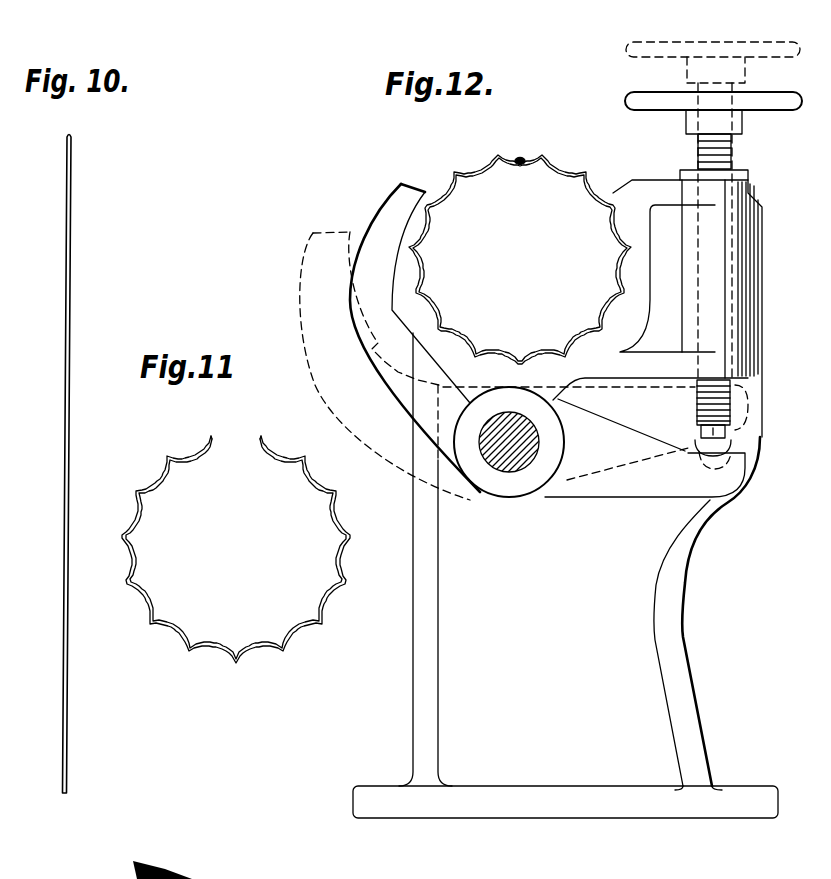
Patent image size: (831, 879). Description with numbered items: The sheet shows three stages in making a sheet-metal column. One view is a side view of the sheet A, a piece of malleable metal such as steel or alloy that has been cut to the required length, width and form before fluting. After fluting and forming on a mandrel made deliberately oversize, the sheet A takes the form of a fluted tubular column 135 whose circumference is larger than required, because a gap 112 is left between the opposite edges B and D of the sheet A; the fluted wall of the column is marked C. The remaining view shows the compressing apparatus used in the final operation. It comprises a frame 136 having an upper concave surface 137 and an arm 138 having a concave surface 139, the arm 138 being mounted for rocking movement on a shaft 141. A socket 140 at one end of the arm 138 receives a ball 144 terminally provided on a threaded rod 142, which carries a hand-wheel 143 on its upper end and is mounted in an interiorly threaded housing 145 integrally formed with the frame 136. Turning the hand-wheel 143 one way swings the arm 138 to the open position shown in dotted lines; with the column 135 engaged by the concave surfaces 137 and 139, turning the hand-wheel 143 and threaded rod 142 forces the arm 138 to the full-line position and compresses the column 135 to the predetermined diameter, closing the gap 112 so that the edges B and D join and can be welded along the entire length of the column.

In FIG. 10, the sheet A is at (70, 417).
In FIG. 11, the gap 112 is at (237, 440).
In FIG. 11, the column 135 is at (217, 648).
In FIG. 12, the column 135 is at (490, 350).
In FIG. 11, the end of the sheet D is at (205, 436).
In FIG. 12, the end of the sheet D is at (512, 155).
In FIG. 11, the end of the sheet B is at (262, 436).
In FIG. 12, the end of the sheet B is at (525, 160).
In FIG. 11, the ring wall C is at (297, 458).
In FIG. 12, the ring wall C is at (560, 172).
In FIG. 12, the frame 136 is at (643, 580).
In FIG. 12, the upper concave surface 137 is at (618, 313).
In FIG. 12, the arm 138 is at (390, 372).
In FIG. 12, the concave surface 139 is at (412, 233).
In FIG. 12, the socket 140 is at (694, 460).
In FIG. 12, the shaft 141 is at (507, 473).
In FIG. 12, the threaded rod 142 is at (731, 152).
In FIG. 12, the hand-wheel 143 is at (750, 100).
In FIG. 12, the ball 144 is at (727, 452).
In FIG. 12, the interiorly threaded housing 145 is at (716, 300).